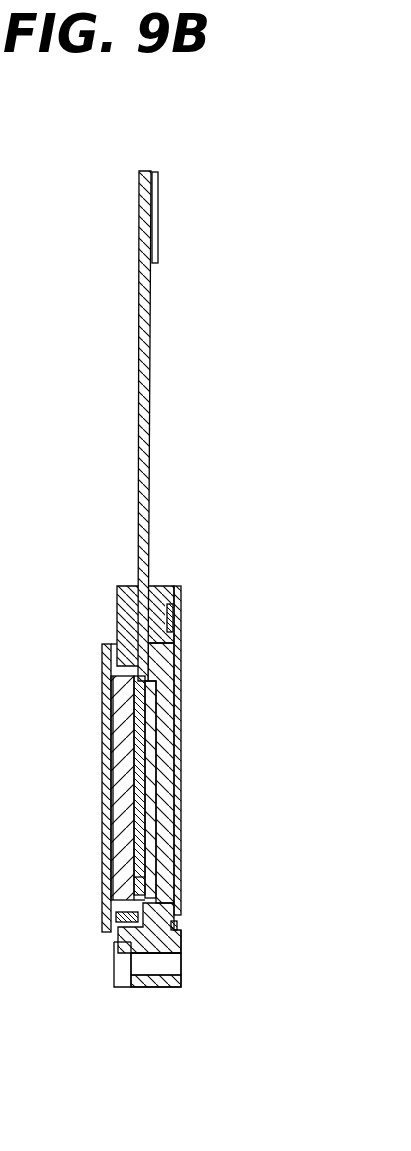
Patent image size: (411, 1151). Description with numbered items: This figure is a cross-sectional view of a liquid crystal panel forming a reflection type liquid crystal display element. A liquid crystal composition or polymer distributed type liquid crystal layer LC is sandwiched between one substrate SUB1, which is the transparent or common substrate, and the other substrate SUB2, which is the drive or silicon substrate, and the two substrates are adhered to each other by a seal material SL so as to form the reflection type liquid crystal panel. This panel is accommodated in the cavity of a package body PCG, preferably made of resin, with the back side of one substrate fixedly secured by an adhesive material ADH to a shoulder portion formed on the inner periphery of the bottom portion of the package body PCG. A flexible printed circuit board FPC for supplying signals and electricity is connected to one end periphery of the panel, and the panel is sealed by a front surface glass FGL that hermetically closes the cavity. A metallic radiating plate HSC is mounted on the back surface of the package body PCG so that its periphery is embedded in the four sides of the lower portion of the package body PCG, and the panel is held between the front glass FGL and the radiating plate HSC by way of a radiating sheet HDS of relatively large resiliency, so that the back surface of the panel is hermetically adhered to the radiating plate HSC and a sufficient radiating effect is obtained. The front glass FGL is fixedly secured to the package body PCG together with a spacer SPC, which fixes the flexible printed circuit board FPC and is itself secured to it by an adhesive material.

The flexible printed circuit board FPC is at (137, 445).
The spacer SPC is at (117, 603).
The substrate SUB1 is at (120, 735).
The radiating sheet HDS is at (170, 740).
The substrate SUB2 is at (152, 758).
The liquid crystal layer LC is at (137, 792).
The front surface glass FGL is at (113, 858).
The radiating plate HSC is at (181, 828).
The seal material SL is at (118, 917).
The adhesive material ADH is at (118, 930).
The package body PCG is at (173, 945).